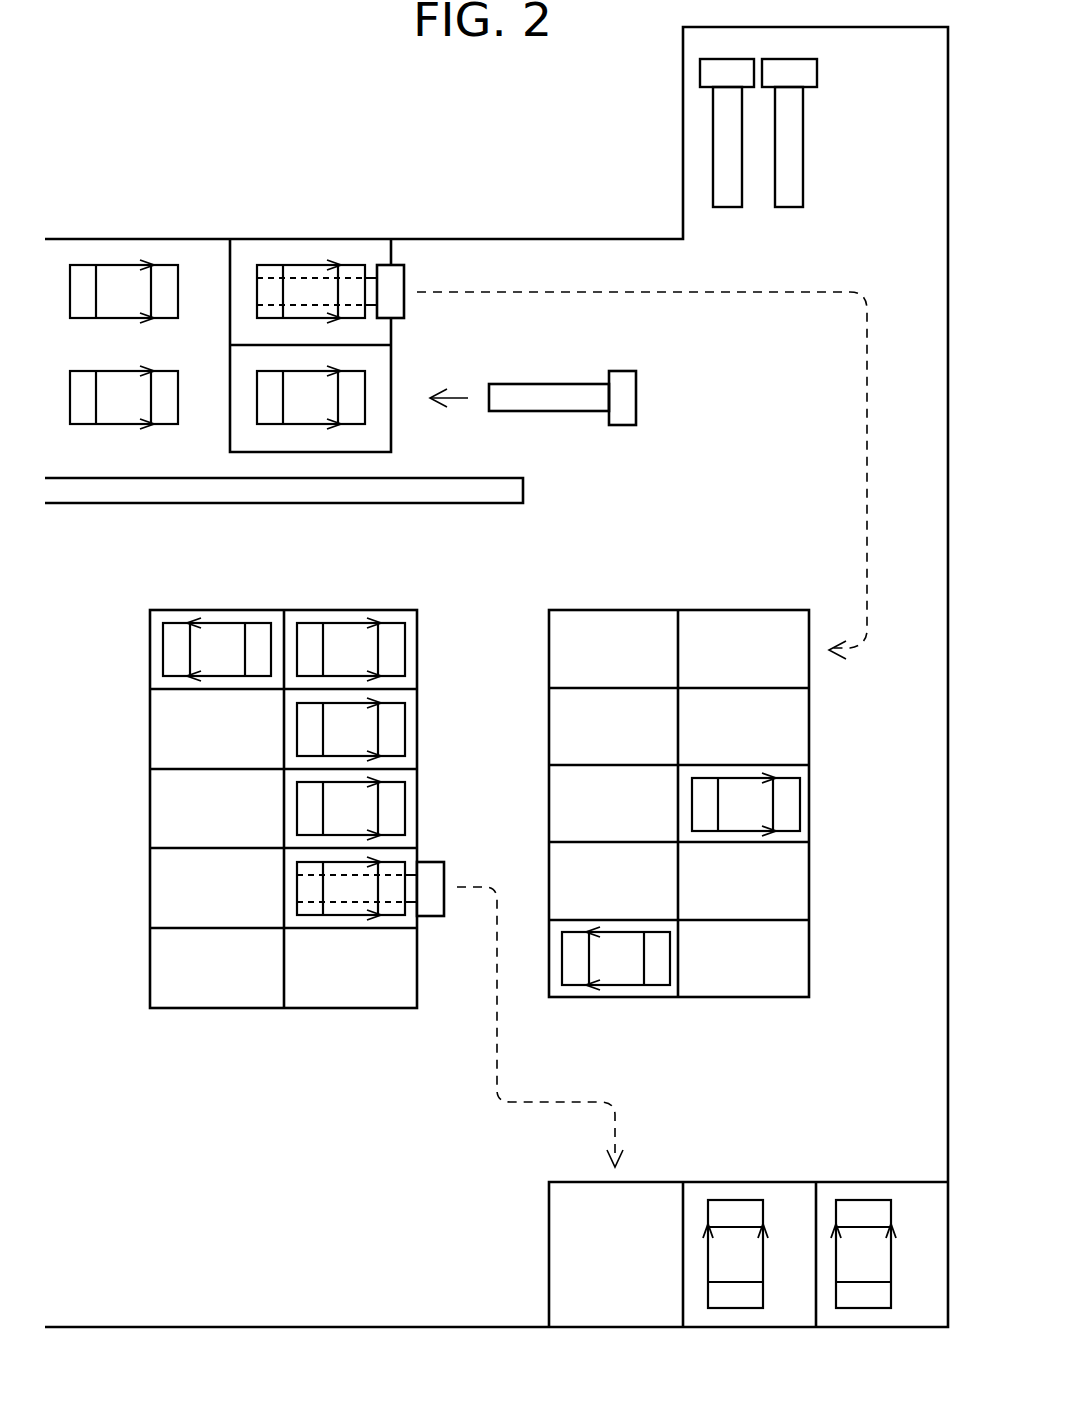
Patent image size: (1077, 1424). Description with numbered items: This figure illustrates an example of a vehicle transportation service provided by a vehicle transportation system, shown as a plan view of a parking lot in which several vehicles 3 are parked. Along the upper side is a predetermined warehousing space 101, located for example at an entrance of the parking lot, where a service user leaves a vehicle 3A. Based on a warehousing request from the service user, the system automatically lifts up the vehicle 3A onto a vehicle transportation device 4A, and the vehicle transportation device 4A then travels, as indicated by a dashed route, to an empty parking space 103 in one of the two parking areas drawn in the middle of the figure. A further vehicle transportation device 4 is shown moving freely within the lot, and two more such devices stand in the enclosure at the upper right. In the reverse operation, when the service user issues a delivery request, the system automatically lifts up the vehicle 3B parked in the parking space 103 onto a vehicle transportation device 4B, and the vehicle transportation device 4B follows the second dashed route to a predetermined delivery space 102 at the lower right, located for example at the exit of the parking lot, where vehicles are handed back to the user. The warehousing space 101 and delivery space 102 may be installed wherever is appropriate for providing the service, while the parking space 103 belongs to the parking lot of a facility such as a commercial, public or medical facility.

The vehicle 3 is at (127, 262).
The vehicle of the service user parked in the warehousing space 3A is at (292, 262).
The vehicle of the service user parked in the parking space 3B is at (318, 918).
The vehicle transportation device 4 is at (637, 397).
The vehicle transportation device 4A is at (407, 290).
The vehicle transportation device 4B is at (445, 874).
The warehousing space 101 is at (393, 250).
The delivery space 102 is at (548, 1207).
The parking space 103 is at (357, 608).